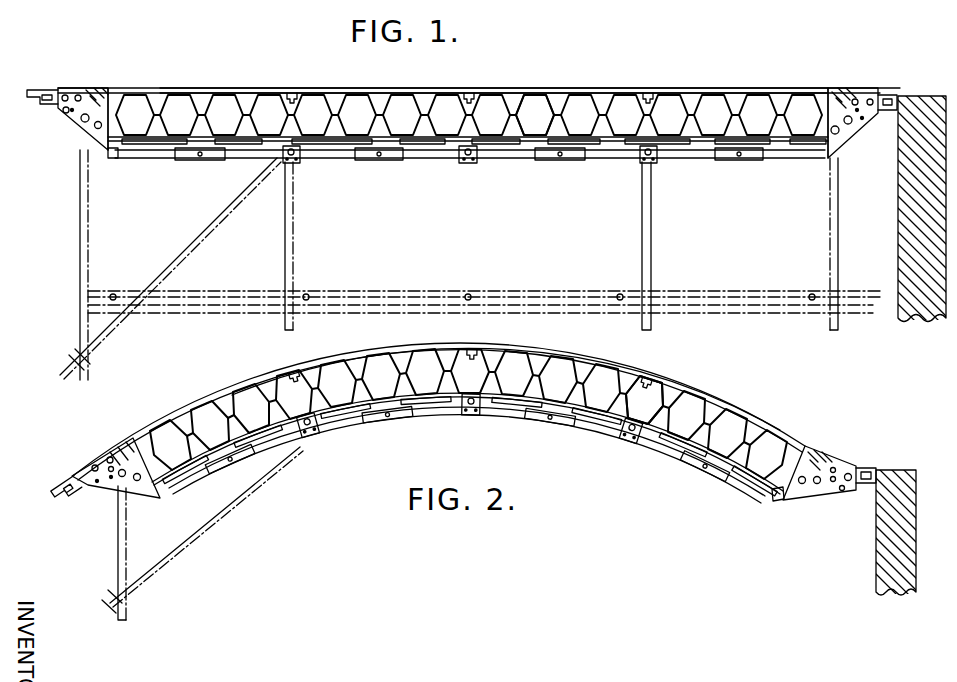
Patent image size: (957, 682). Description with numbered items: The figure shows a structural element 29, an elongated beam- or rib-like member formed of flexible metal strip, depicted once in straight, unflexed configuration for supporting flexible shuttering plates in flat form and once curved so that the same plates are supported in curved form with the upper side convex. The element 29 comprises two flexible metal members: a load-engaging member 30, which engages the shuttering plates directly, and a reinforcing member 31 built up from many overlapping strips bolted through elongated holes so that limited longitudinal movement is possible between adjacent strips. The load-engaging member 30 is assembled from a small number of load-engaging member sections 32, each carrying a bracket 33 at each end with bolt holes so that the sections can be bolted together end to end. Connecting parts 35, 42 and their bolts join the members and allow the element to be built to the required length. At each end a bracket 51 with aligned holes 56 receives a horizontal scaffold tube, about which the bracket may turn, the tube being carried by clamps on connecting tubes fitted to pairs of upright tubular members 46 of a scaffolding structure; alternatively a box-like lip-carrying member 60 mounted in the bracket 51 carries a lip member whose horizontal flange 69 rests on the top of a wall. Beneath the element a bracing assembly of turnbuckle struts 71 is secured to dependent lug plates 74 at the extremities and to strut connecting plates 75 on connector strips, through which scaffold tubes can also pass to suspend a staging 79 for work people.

In FIG. 1, the structural element 29 is at (518, 88).
In FIG. 2, the structural element 29 is at (292, 395).
In FIG. 1, the load-engaging member 30 is at (600, 88).
In FIG. 2, the load-engaging member 30 is at (384, 362).
In FIG. 1, the reinforcing member 31 is at (580, 148).
In FIG. 2, the reinforcing member 31 is at (372, 416).
In FIG. 1, the load-engaging member section 32 is at (340, 88).
In FIG. 2, the load-engaging member section 32 is at (576, 358).
In FIG. 1, the bracket 33 is at (470, 98).
In FIG. 2, the bracket 33 is at (490, 357).
In FIG. 1, the connecting part 35 is at (243, 96).
In FIG. 2, the connecting part 35 is at (622, 368).
In FIG. 1, the connecting part 42 is at (528, 128).
In FIG. 2, the connecting part 42 is at (672, 420).
In FIG. 1, the upright tubular member 46 is at (88, 208).
In FIG. 2, the upright tubular member 46 is at (118, 522).
In FIG. 1, the bracket 51 is at (94, 100).
In FIG. 2, the bracket 51 is at (126, 454).
In FIG. 1, the aligned holes 56 is at (94, 126).
In FIG. 2, the aligned holes 56 is at (138, 481).
In FIG. 1, the lip-carrying member 60 is at (50, 90).
In FIG. 2, the lip-carrying member 60 is at (866, 485).
In FIG. 1, the horizontal flange 69 is at (904, 95).
In FIG. 2, the horizontal flange 69 is at (884, 469).
In FIG. 1, the strut 71 is at (170, 156).
In FIG. 2, the strut 71 is at (290, 460).
In FIG. 1, the lug plate 74 is at (114, 152).
In FIG. 2, the lug plate 74 is at (778, 496).
In FIG. 1, the strut connecting plates 75 is at (298, 160).
In FIG. 2, the strut connecting plates 75 is at (308, 446).
In FIG. 1, the staging 79 is at (708, 293).